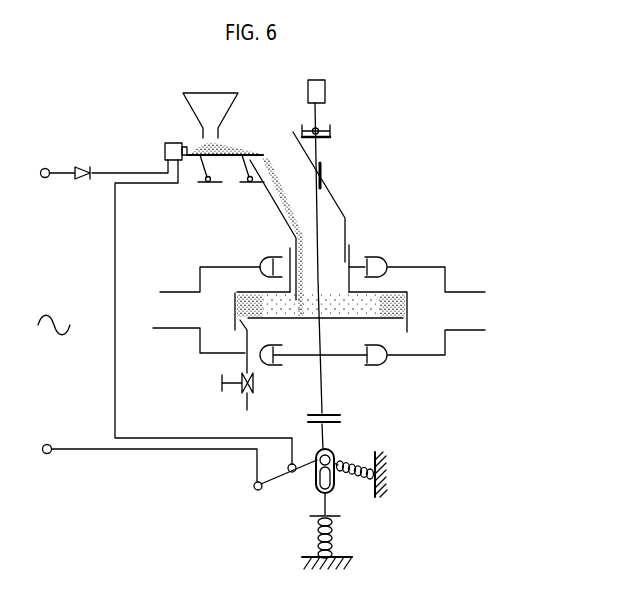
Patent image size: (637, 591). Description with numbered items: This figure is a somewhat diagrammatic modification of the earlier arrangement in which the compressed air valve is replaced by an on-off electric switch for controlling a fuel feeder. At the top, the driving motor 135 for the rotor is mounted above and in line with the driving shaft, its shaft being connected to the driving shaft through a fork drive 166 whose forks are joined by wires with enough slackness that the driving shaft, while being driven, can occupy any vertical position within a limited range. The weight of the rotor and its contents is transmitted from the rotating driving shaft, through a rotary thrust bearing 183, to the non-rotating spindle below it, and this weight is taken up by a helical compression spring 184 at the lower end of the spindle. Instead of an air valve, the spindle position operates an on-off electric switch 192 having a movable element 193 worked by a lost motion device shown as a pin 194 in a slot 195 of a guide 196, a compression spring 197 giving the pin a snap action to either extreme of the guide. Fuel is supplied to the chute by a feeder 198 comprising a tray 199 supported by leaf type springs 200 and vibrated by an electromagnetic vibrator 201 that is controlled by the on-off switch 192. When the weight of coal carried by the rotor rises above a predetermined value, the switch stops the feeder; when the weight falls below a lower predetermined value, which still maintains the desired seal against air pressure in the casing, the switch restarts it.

The driving motor 135 is at (323, 96).
The fork drive 166 is at (331, 133).
The rotary thrust bearing 183 is at (334, 415).
The helical compression spring 184 is at (333, 541).
The on-off electric switch 192 is at (310, 496).
The movable element 193 is at (272, 481).
The pin 194 is at (330, 472).
The slot 195 is at (320, 494).
The guide 196 is at (331, 492).
The compression spring 197 is at (345, 466).
The feeder 198 is at (162, 112).
The tray 199 is at (236, 147).
The leaf type springs 200 is at (223, 158).
The electromagnetic vibrator 201 is at (186, 145).